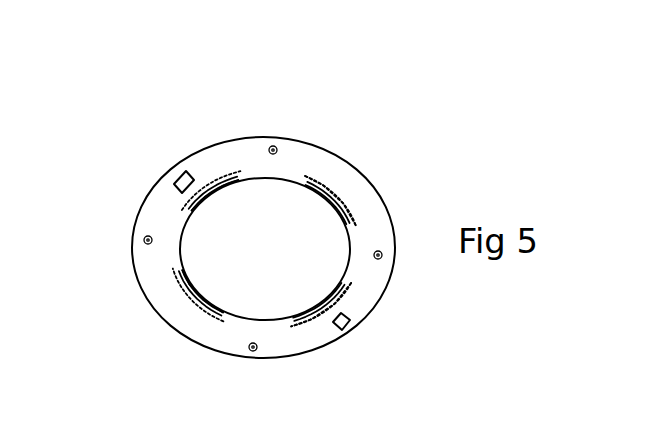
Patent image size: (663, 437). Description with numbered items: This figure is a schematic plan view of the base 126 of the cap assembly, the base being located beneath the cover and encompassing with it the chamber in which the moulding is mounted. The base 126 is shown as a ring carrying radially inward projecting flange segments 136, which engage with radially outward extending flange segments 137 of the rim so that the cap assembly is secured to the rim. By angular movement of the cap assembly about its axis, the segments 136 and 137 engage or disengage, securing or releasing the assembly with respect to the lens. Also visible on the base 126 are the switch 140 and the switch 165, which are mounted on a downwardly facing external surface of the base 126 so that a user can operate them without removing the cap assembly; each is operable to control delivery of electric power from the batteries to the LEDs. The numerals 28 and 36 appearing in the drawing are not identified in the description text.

The cover plate 28 is at (292, 313).
The retaining tab 36 is at (198, 193).
The base 126 is at (365, 188).
The flange segments 136 is at (344, 213).
The flange segments 137 is at (250, 218).
The switch 140 is at (345, 330).
The switch 165 is at (173, 176).